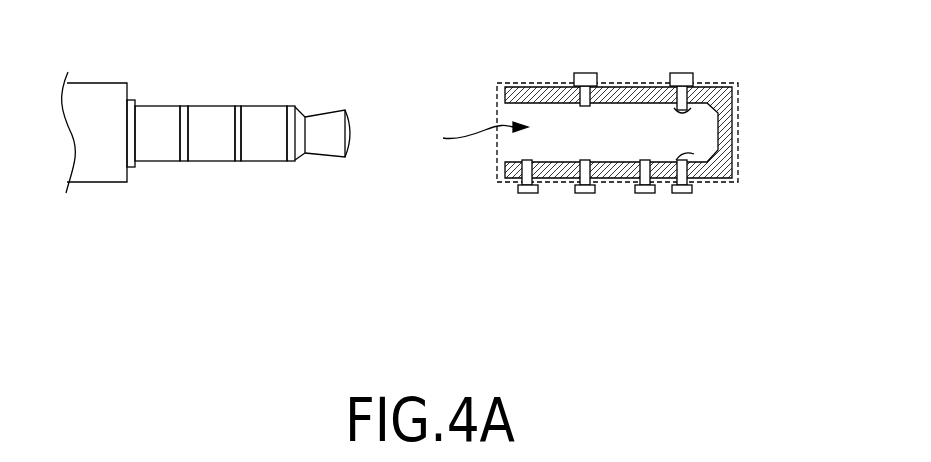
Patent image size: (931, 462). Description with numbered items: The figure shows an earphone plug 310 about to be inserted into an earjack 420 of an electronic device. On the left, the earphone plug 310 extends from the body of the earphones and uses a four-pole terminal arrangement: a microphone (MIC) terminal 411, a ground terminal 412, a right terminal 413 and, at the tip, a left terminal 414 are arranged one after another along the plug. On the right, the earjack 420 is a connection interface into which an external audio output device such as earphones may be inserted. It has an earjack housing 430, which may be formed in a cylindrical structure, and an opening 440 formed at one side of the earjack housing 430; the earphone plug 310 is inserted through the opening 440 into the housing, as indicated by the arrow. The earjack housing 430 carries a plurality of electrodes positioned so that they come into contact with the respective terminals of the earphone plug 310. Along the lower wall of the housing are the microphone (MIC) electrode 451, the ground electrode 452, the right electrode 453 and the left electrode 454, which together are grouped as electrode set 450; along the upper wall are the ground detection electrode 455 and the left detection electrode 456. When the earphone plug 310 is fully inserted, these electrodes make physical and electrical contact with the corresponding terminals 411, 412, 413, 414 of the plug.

The earphone plug 310 is at (93, 82).
The microphone (MIC) terminal 411 is at (156, 106).
The ground terminal 412 is at (210, 106).
The right terminal 413 is at (267, 106).
The left terminal 414 is at (322, 115).
The earjack 420 is at (738, 128).
The earjack housing 430 is at (515, 83).
The opening 440 is at (466, 137).
The terminal group 450 is at (609, 229).
The microphone (MIC) electrode 451 is at (525, 195).
The ground electrode 452 is at (584, 195).
The right electrode 453 is at (645, 195).
The left electrode 454 is at (685, 205).
The ground detection electrode 455 is at (583, 73).
The left detection electrode 456 is at (690, 73).